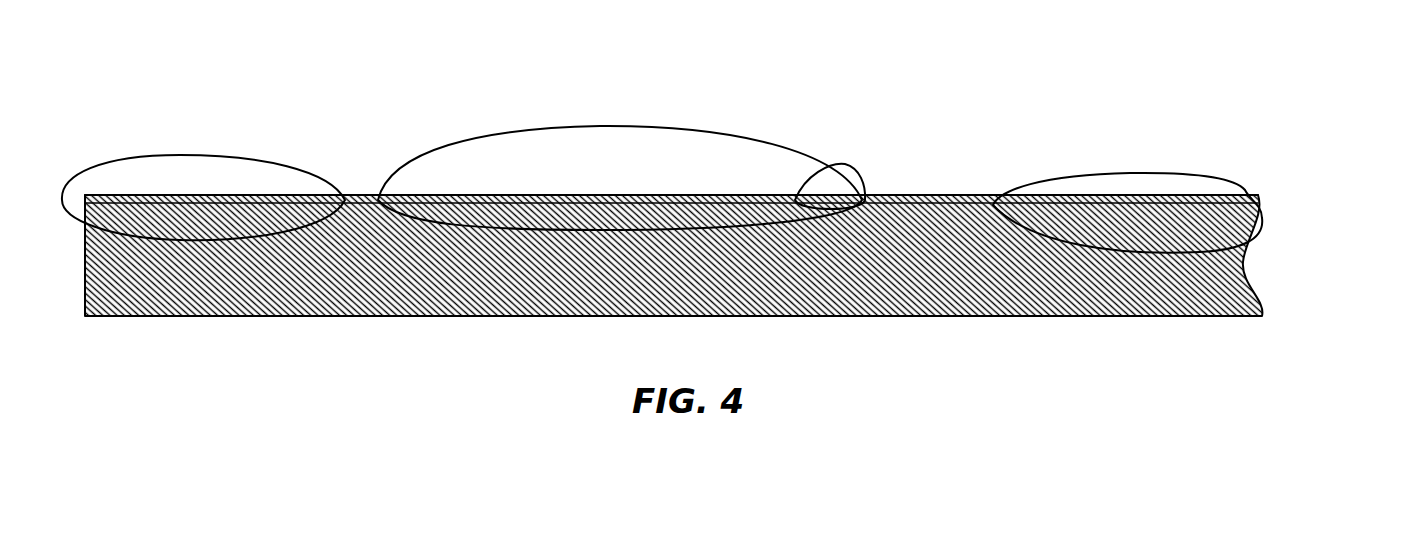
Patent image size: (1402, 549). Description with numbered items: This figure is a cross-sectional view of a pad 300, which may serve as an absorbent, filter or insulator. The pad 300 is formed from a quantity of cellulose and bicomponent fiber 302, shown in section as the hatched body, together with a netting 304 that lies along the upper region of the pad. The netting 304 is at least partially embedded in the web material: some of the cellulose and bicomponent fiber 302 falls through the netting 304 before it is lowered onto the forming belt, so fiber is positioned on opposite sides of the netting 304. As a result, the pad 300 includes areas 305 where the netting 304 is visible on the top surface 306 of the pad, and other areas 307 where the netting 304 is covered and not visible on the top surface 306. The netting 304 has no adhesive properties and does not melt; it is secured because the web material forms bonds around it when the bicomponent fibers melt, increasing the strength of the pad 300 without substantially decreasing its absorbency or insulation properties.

The pad 300 is at (722, 207).
The cellulose and bicomponent fiber 302 is at (873, 293).
The netting 304 is at (671, 174).
The areas where the netting is visible 305 is at (232, 156).
The top surface 306 is at (953, 197).
The areas where the netting is not visible 307 is at (608, 122).